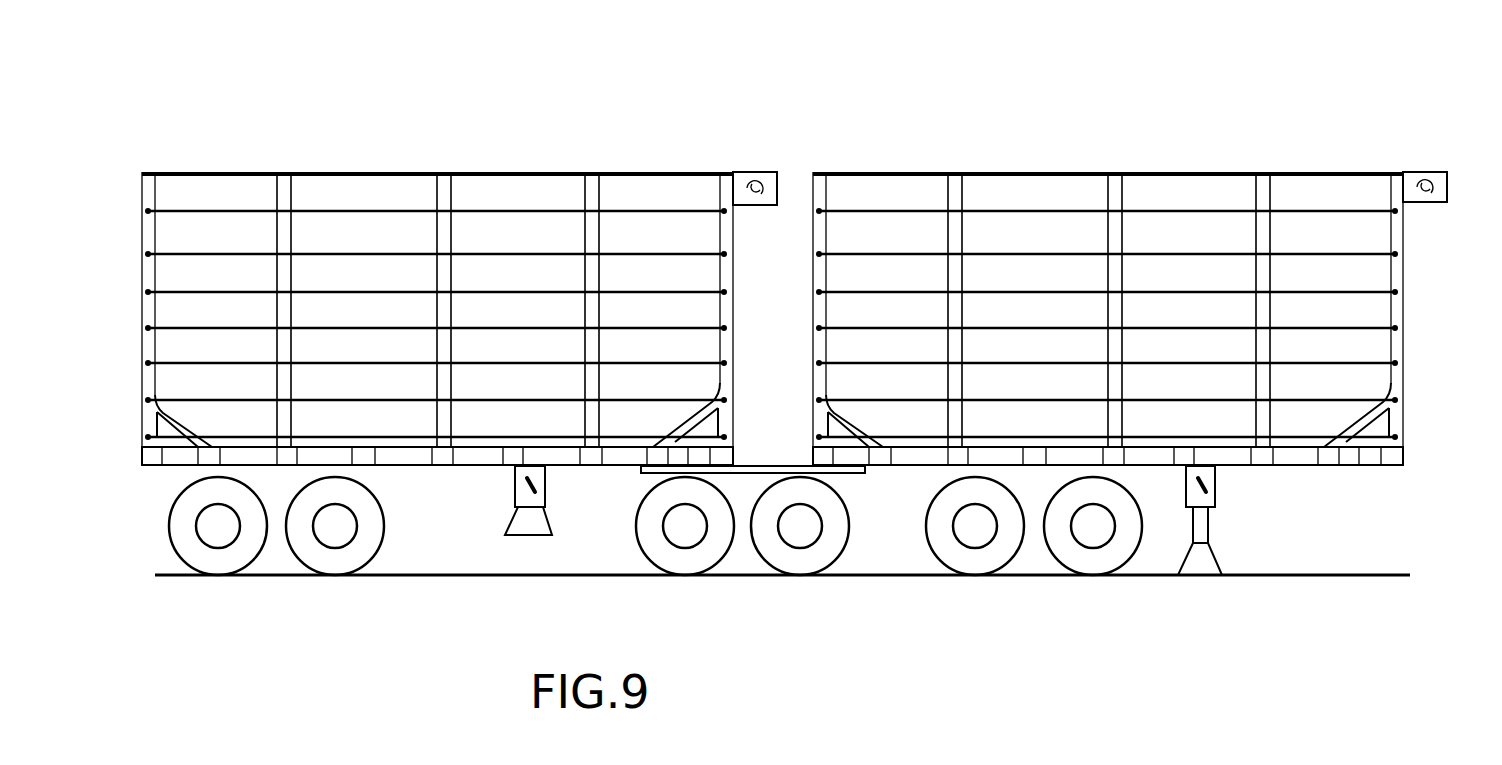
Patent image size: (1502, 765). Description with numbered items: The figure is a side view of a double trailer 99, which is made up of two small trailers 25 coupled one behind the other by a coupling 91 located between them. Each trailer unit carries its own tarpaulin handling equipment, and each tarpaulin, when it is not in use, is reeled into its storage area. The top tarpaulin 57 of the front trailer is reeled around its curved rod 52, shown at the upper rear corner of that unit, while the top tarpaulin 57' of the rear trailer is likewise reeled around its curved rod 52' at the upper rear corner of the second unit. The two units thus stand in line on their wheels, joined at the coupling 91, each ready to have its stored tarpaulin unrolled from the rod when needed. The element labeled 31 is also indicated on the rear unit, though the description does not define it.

The small trailer 25 is at (332, 172).
The top tarpaulin 57 is at (463, 267).
The curved rod 52 is at (804, 138).
The top tarpaulin 57' is at (1139, 267).
The curved rod 52' is at (1452, 122).
The double trailer 99 is at (463, 470).
The coupling 91 is at (855, 470).
The stanchion post 31 is at (1258, 380).